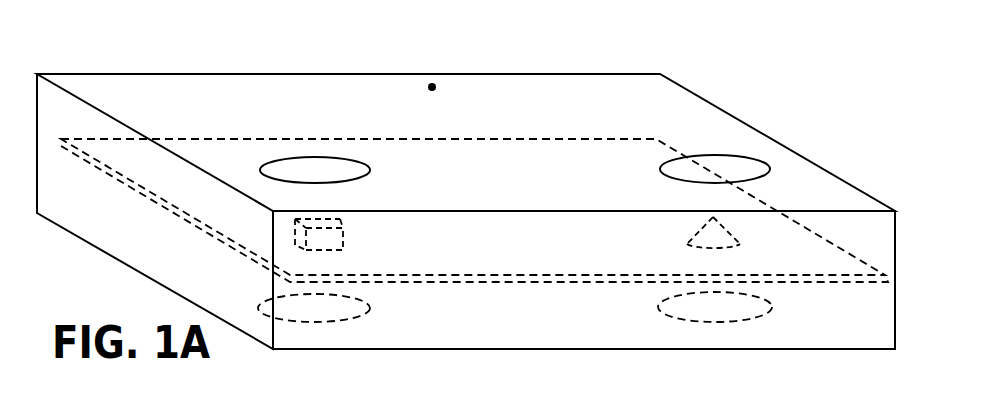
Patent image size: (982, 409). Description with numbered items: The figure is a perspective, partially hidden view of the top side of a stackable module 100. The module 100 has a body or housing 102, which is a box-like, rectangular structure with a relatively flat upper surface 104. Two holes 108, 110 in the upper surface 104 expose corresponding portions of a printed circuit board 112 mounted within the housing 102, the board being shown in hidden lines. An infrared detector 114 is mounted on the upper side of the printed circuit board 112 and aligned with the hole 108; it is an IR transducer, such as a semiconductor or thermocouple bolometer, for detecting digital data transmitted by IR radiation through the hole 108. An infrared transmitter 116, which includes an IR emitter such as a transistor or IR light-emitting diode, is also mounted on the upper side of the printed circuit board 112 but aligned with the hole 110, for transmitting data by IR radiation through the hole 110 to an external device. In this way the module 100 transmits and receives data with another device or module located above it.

The stackable module 100 is at (787, 108).
The housing 102 is at (245, 73).
The upper surface 104 is at (431, 83).
The hole 108 is at (332, 183).
The hole 110 is at (667, 177).
The printed circuit board 112 is at (168, 207).
The infrared detector 114 is at (343, 238).
The infrared transmitter 116 is at (687, 245).